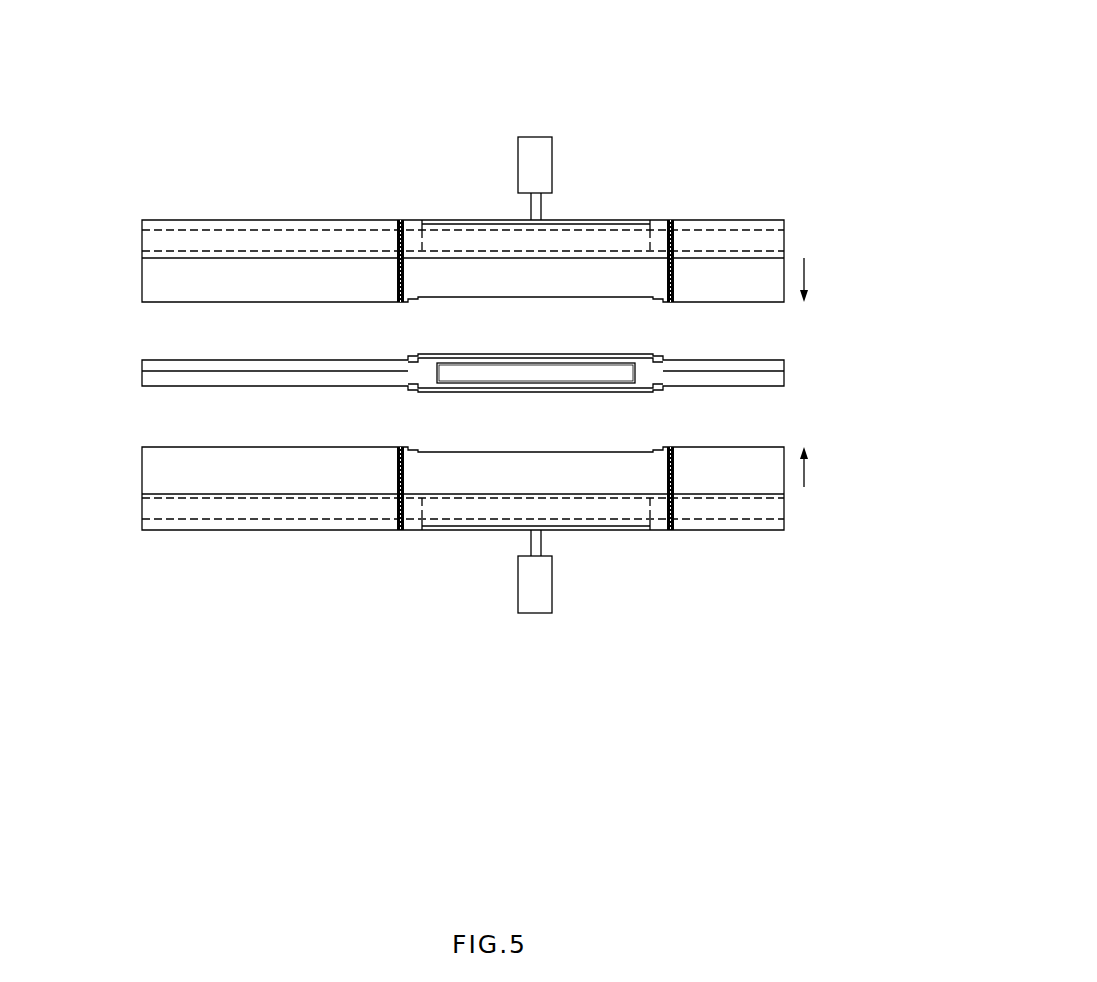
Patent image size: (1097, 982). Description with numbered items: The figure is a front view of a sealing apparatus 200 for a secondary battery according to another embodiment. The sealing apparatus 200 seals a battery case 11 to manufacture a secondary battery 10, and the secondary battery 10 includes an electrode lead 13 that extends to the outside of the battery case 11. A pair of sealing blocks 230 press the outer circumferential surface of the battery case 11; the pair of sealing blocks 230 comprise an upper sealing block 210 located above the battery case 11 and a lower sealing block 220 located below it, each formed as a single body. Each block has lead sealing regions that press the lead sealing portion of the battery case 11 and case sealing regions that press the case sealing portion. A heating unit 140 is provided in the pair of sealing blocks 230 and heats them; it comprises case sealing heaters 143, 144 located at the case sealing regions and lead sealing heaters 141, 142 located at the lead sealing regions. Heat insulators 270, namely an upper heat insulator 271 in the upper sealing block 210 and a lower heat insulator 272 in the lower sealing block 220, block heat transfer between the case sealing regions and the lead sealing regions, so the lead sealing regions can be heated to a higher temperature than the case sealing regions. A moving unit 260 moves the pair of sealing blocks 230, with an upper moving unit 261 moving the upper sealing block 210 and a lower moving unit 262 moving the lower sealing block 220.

The sealing apparatus 200 is at (762, 27).
The secondary battery 10 is at (112, 371).
The battery case 11 is at (195, 350).
The electrode lead 13 is at (598, 376).
The heating unit 140 is at (806, 678).
The lead sealing heater 141 is at (592, 232).
The lead sealing heater 142 is at (458, 512).
The case sealing heater 143 is at (206, 230).
The case sealing heater 144 is at (188, 516).
The upper sealing block 210 is at (815, 238).
The lower sealing block 220 is at (815, 506).
The pair of sealing blocks 230 is at (897, 258).
The moving unit 260 is at (652, 697).
The upper moving unit 261 is at (535, 137).
The lower moving unit 262 is at (535, 613).
The heat insulators 270 is at (392, 697).
The upper heat insulator 271 is at (400, 222).
The lower heat insulator 272 is at (400, 530).